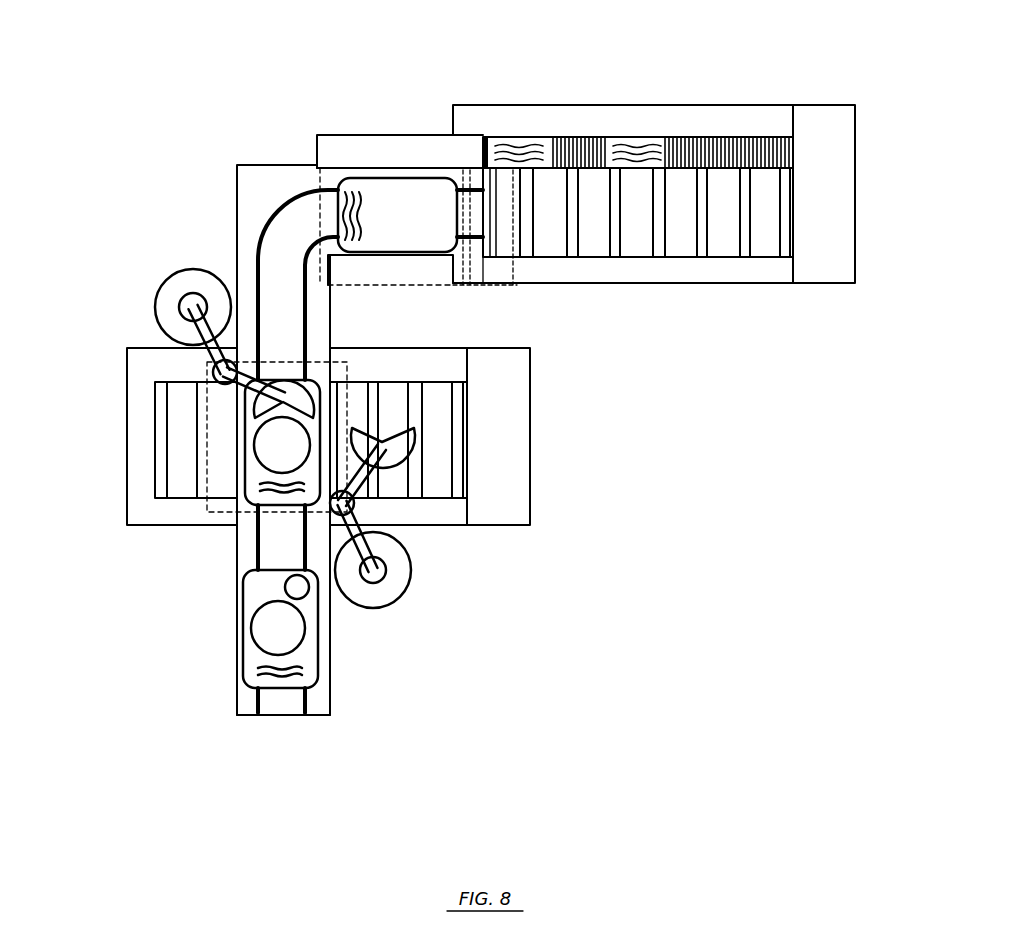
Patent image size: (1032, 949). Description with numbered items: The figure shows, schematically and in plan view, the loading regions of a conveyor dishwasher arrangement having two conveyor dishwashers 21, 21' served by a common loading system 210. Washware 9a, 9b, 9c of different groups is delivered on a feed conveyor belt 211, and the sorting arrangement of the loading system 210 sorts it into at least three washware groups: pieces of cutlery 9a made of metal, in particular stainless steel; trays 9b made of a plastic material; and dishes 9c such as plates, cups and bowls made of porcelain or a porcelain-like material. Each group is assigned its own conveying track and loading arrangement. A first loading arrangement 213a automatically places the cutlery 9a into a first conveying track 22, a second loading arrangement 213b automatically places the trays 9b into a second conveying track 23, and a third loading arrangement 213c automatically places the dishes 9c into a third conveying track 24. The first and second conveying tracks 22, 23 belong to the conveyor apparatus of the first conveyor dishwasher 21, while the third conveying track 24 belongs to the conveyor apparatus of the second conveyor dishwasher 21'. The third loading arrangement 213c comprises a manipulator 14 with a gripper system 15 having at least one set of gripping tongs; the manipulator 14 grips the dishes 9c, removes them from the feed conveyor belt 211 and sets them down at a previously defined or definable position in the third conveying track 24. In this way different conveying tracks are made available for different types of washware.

The loading system 210 is at (57, 104).
The feed conveyor belt 211 is at (265, 247).
The first loading arrangement 213a is at (465, 67).
The second loading arrangement 213b is at (533, 67).
The third loading arrangement 213c is at (200, 515).
The first conveyor dishwasher 21 is at (695, 194).
The second conveyor dishwasher 21' is at (479, 436).
The first conveying track 22 is at (745, 157).
The second conveying track 23 is at (677, 223).
The third conveying track 24 is at (178, 417).
The pieces of cutlery 9a is at (347, 200).
The trays 9b is at (428, 223).
The dishes 9c is at (297, 587).
The manipulator 14 is at (198, 305).
The gripper system 15 is at (287, 392).